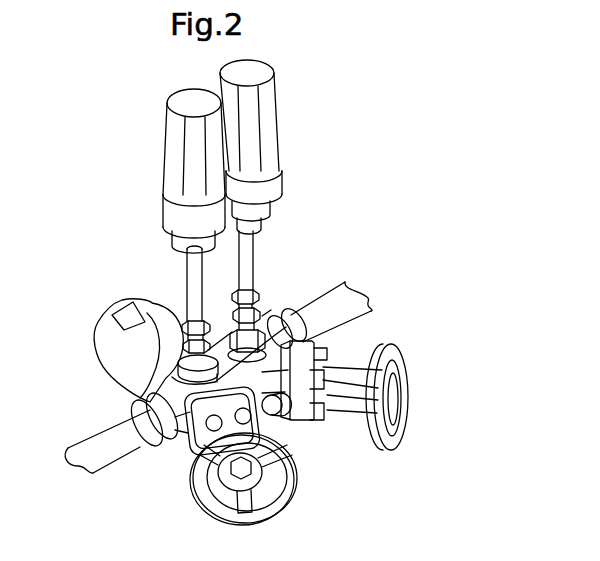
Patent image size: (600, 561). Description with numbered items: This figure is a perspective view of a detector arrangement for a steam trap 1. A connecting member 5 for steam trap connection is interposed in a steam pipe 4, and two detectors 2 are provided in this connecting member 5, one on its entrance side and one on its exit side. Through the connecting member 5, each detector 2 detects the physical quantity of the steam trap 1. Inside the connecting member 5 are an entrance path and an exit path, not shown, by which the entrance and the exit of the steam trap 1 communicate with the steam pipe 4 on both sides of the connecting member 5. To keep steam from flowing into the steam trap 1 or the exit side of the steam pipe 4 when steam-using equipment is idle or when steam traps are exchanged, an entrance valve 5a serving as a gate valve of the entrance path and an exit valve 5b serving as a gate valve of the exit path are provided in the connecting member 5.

The steam trap 1 is at (105, 334).
The detector 2 is at (218, 88).
The steam pipe 4 is at (100, 436).
The connecting member 5 is at (270, 313).
The entrance valve 5a is at (407, 386).
The exit valve 5b is at (207, 506).